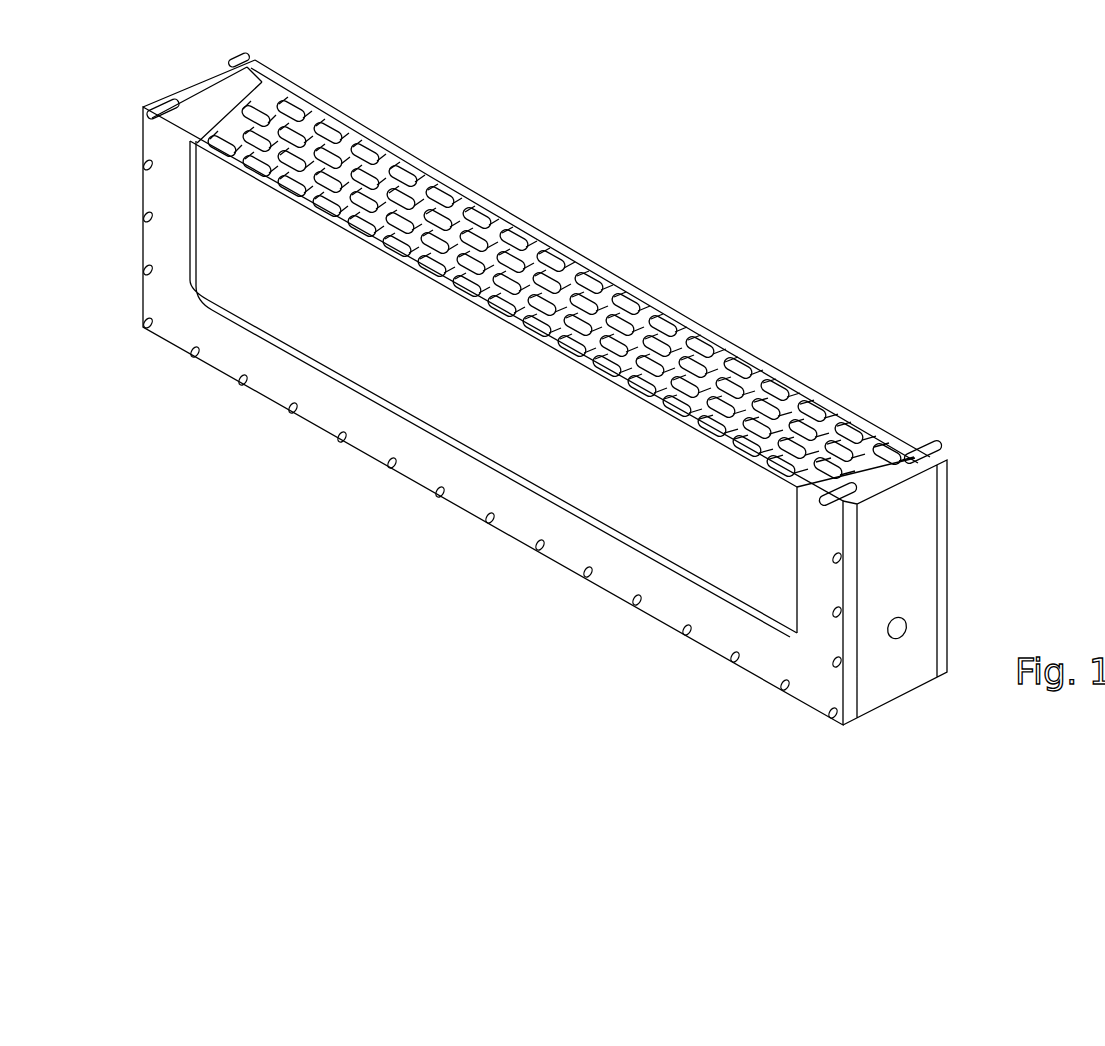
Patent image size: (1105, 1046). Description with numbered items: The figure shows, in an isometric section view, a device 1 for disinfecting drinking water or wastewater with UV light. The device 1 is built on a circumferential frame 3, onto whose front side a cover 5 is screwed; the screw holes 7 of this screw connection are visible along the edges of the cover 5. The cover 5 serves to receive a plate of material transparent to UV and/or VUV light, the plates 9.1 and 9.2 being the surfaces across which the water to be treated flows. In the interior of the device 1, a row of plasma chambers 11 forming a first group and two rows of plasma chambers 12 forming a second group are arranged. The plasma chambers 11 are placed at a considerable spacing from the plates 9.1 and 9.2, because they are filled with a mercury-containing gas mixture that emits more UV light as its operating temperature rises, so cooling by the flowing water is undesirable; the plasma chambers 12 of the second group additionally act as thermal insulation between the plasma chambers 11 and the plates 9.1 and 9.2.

The device 1 is at (697, 260).
The circumferential frame 3 is at (910, 675).
The cover 5 is at (805, 697).
The screw holes 7 is at (937, 458).
The plate 9.1 is at (607, 517).
The plate 9.2 is at (768, 362).
The plasma chambers of the first group 11 is at (428, 165).
The plasma chambers of the second group 12 is at (610, 287).